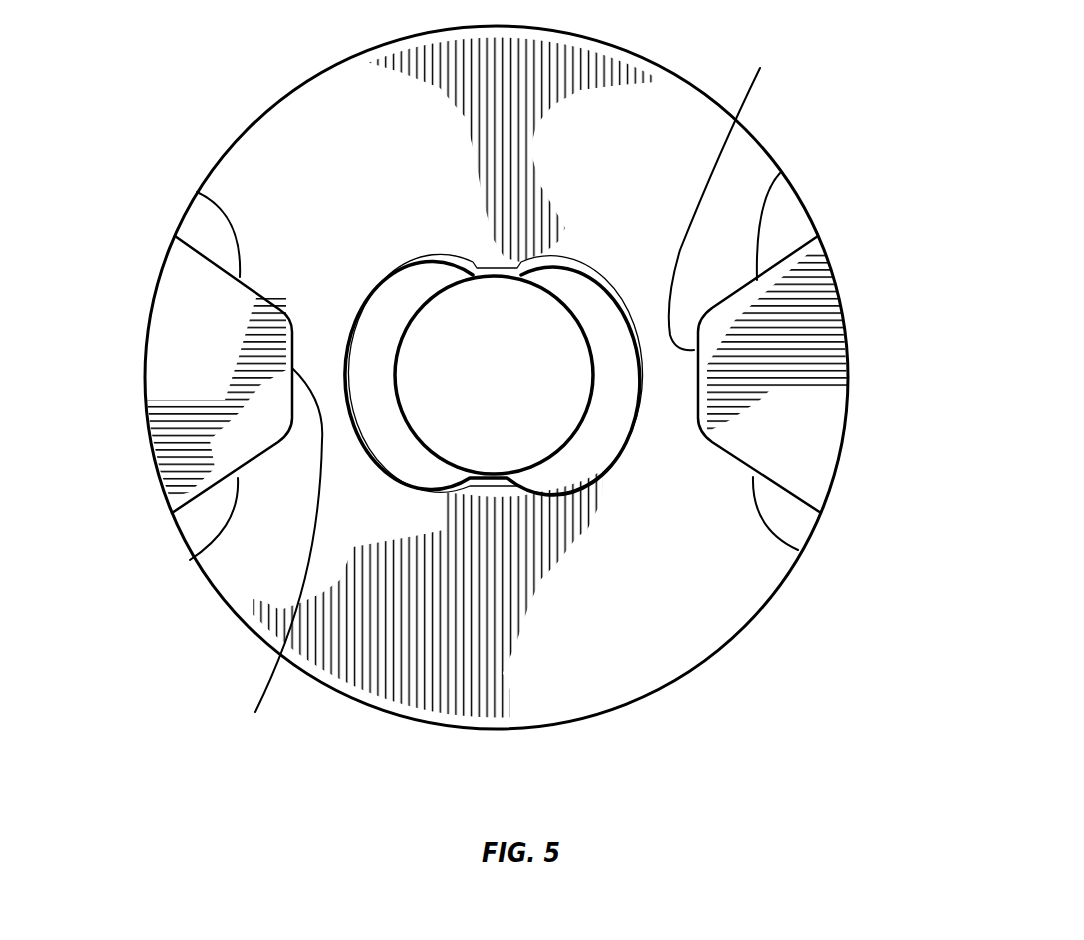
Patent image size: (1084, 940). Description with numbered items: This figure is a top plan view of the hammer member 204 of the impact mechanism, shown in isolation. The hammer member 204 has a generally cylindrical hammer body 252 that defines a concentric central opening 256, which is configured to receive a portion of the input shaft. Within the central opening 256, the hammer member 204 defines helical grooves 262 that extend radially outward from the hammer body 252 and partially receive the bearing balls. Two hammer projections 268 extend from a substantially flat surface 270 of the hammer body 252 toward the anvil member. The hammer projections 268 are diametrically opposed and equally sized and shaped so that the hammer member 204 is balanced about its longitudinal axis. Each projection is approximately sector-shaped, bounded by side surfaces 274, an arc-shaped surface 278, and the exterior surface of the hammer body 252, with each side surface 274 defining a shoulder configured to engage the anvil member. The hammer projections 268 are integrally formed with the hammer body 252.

The hammer member 204 is at (485, 377).
The hammer body 252 is at (220, 157).
The central opening 256 is at (580, 452).
The helical grooves 262 is at (411, 260).
The hammer projections 268 is at (803, 357).
The flat surface 270 is at (372, 127).
The side surfaces 274 is at (197, 192).
The arc-shaped surface 278 is at (507, 393).